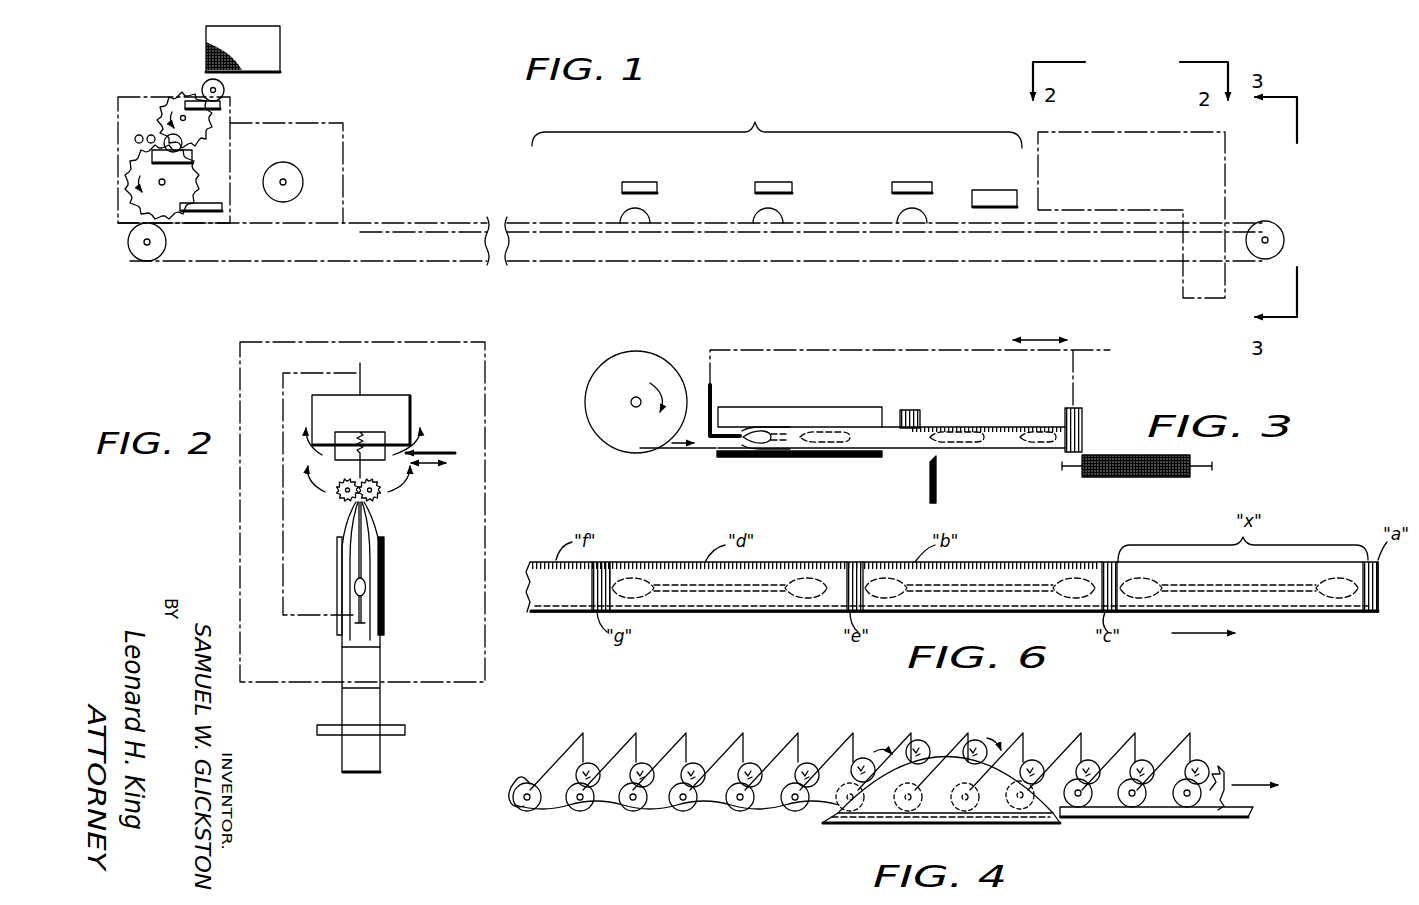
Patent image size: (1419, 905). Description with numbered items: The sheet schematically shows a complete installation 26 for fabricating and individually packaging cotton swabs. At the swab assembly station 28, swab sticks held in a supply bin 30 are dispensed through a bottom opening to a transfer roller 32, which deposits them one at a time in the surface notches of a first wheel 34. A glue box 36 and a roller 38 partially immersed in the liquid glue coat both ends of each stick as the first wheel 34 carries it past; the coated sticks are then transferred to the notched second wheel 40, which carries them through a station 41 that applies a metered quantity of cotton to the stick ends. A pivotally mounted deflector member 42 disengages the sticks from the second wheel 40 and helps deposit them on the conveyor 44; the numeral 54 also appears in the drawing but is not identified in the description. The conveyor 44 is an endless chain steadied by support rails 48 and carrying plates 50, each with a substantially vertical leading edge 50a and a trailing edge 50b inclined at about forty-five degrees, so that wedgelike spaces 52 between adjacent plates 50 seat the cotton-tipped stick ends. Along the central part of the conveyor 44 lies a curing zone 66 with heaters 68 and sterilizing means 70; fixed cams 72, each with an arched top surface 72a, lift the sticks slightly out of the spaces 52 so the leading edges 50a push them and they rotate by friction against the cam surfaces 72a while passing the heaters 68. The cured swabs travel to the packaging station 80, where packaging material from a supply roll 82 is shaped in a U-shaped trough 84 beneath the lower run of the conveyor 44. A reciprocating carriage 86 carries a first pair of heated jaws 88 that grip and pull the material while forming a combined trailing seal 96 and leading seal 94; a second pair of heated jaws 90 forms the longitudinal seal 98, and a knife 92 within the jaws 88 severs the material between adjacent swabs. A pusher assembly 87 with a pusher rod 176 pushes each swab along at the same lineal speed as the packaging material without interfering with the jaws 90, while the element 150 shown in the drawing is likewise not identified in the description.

In FIG. 1, the complete installation 26 is at (826, 66).
In FIG. 1, the swab assembly station 28 is at (152, 66).
In FIG. 1, the supply bin 30 is at (274, 48).
In FIG. 1, the transfer roller 32 is at (202, 79).
In FIG. 1, the first wheel 34 is at (161, 104).
In FIG. 1, the glue box 36 is at (150, 161).
In FIG. 1, the roller 38 is at (164, 132).
In FIG. 1, the second wheel 40 is at (148, 198).
In FIG. 1, the cotton applying station 41 is at (135, 136).
In FIG. 1, the deflector member 42 is at (208, 212).
In FIG. 1, the conveyor 44 is at (264, 263).
In FIG. 4, the conveyor 44 is at (638, 824).
In FIG. 4, the support rails 48 is at (1215, 815).
In FIG. 4, the plates 50 is at (780, 782).
In FIG. 4, the leading edge 50a is at (638, 752).
In FIG. 4, the trailing edge 50b is at (783, 752).
In FIG. 4, the wedgelike spaces 52 is at (707, 755).
In FIG. 1, the drive housing 54 is at (338, 151).
In FIG. 1, the curing zone 66 is at (760, 124).
In FIG. 1, the heaters 68 is at (637, 180).
In FIG. 1, the sterilizing means 70 is at (985, 190).
In FIG. 1, the fixed cam means 72 is at (651, 216).
In FIG. 4, the fixed cam means 72 is at (862, 822).
In FIG. 4, the cam top surface 72a is at (935, 752).
In FIG. 1, the packaging station 80 is at (1234, 192).
In FIG. 2, the packaging station 80 is at (496, 520).
In FIG. 3, the packaging station 80 is at (745, 468).
In FIG. 2, the supply roll 82 is at (363, 750).
In FIG. 3, the supply roll 82 is at (616, 372).
In FIG. 2, the U-shaped trough 84 is at (382, 625).
In FIG. 3, the U-shaped trough 84 is at (822, 456).
In FIG. 2, the carriage 86 is at (378, 405).
In FIG. 2, the pusher assembly 87 is at (280, 490).
In FIG. 3, the pusher assembly 87 is at (845, 348).
In FIG. 2, the first pair of heated jaws 88 is at (382, 435).
In FIG. 3, the first pair of heated jaws 88 is at (1065, 412).
In FIG. 2, the second pair of heated jaws 90 is at (335, 498).
In FIG. 3, the second pair of heated jaws 90 is at (902, 410).
In FIG. 2, the knife 92 is at (455, 450).
In FIG. 3, the knife 92 is at (940, 492).
In FIG. 6, the leading seal 94 is at (848, 562).
In FIG. 6, the trailing seal 96 is at (862, 562).
In FIG. 6, the longitudinal seal 98 is at (985, 562).
In FIG. 3, the take-up roll 150 is at (1095, 455).
In FIG. 2, the pusher rod 176 is at (365, 612).
In FIG. 3, the pusher rod 176 is at (715, 400).